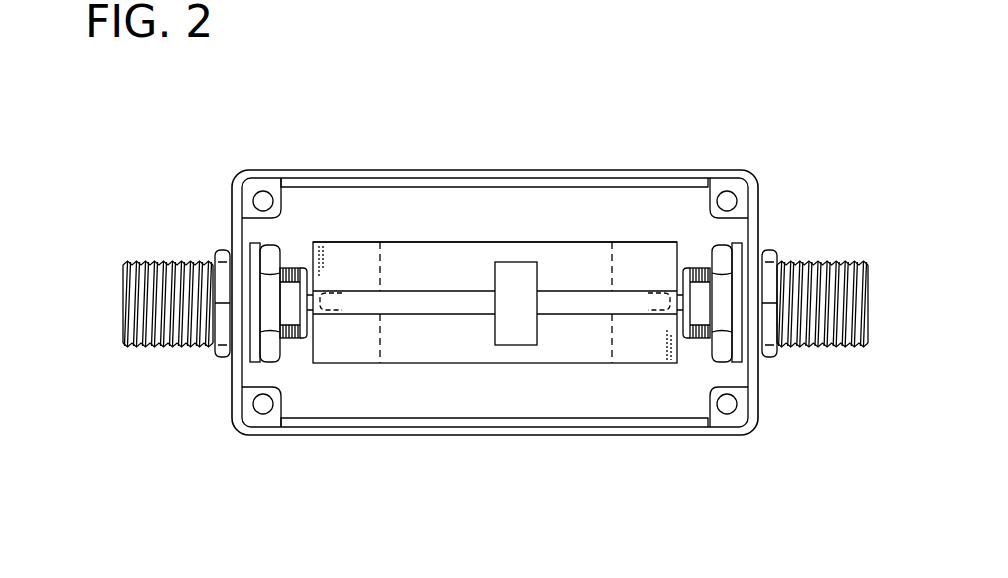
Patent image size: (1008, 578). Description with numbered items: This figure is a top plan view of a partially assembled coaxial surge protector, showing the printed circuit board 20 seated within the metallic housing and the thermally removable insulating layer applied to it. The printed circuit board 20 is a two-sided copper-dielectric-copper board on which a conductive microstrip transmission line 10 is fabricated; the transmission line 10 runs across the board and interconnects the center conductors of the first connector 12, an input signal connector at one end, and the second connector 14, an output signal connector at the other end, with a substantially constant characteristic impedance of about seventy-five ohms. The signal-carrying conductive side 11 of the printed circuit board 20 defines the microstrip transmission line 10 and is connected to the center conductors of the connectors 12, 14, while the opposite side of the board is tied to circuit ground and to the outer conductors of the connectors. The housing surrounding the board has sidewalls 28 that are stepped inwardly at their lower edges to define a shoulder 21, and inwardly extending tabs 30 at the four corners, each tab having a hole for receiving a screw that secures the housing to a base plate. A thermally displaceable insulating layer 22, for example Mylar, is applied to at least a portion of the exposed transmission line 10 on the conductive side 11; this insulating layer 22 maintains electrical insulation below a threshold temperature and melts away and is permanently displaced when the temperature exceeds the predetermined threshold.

The transmission line 10 is at (427, 315).
The conductive side 11 is at (572, 242).
The first connector 12 is at (120, 290).
The second connector 14 is at (868, 292).
The printed circuit board 20 is at (447, 242).
The shoulder 21 is at (362, 186).
The thermally displaceable insulating layer 22 is at (513, 345).
The sidewalls 28 is at (313, 170).
The tabs 30 is at (252, 186).